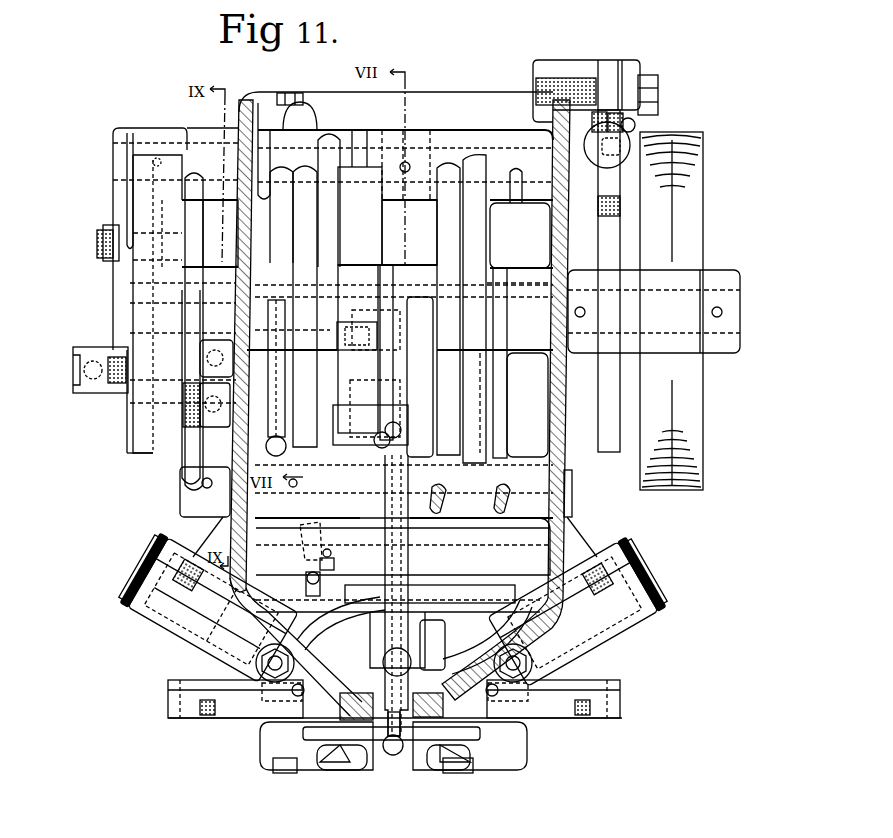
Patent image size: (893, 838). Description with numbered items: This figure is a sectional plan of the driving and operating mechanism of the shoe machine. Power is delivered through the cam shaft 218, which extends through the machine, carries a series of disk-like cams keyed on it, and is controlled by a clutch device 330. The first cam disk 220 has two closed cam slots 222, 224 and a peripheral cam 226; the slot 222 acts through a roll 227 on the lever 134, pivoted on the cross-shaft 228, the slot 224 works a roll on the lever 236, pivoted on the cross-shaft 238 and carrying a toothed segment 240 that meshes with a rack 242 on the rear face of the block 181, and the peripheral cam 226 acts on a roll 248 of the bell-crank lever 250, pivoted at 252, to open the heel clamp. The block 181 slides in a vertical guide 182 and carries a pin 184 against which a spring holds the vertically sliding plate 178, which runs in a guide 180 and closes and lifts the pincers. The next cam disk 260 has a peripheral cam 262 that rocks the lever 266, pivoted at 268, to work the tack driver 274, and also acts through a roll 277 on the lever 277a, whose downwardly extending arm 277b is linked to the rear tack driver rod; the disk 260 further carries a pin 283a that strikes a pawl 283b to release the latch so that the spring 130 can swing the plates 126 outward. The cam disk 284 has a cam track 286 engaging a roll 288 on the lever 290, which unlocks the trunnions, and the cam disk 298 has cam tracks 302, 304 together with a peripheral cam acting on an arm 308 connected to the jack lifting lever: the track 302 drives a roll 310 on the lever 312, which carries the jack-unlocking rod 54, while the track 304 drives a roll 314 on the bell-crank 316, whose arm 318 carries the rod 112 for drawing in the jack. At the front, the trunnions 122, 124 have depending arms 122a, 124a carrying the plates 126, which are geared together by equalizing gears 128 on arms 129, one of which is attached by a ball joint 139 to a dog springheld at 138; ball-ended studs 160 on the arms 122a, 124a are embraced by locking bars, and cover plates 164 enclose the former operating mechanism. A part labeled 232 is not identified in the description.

The rod 54 is at (173, 431).
The rod 112 is at (90, 350).
The trunnion 122 is at (657, 593).
The depending arm 122a is at (563, 673).
The trunnion 124 is at (128, 593).
The depending arm 124a is at (222, 668).
The plate 126 is at (170, 683).
The equalizing gears 128 is at (410, 592).
The gear arms 129 is at (260, 590).
The spring 130 is at (306, 579).
The lever 134 is at (502, 434).
The spring hold of dog 138 is at (320, 564).
The ball joint 139 is at (321, 553).
The ball-ended studs 160 is at (480, 598).
The cover plates 164 is at (170, 720).
The vertically sliding plate 178 is at (427, 740).
The guide 180 is at (393, 755).
The block 181 is at (383, 704).
The vertical guide 182 is at (405, 740).
The pin 184 is at (389, 735).
The cam shaft 218 is at (740, 323).
The cam disk 220 is at (463, 170).
The cam slot 222 is at (497, 388).
The cam slot 224 is at (457, 243).
The peripheral cam 226 is at (477, 260).
The roll 227 is at (488, 358).
The cross-shaft 228 is at (447, 507).
The slide 232 is at (460, 290).
The lever 236 is at (410, 381).
The cross-shaft 238 is at (180, 485).
The toothed segment 240 is at (389, 667).
The rack 242 is at (305, 733).
The roll 248 is at (493, 288).
The bell-crank lever 250 is at (503, 234).
The shaft 252 is at (447, 147).
The cam disk 260 is at (352, 167).
The peripheral cam 262 is at (367, 180).
The lever 266 is at (410, 372).
The pivot 268 is at (387, 398).
The tack driver 274 is at (408, 580).
The roll 277 is at (330, 276).
The lever 277a is at (327, 203).
The downwardly extending arm 277b is at (302, 117).
The pin 283a is at (313, 470).
The pawl 283b is at (340, 525).
The cam disk 284 is at (300, 175).
The cam track 286 is at (403, 367).
The roll 288 is at (323, 260).
The lever 290 is at (273, 422).
The cam disk 298 is at (170, 167).
The cam track 302 is at (188, 207).
The cam track 304 is at (143, 223).
The arm 308 is at (198, 246).
The roll 310 is at (187, 264).
The lever 312 is at (185, 457).
The roll 314 is at (133, 217).
The bell-crank 316 is at (118, 160).
The arm 318 is at (113, 296).
The clutch device 330 is at (605, 253).